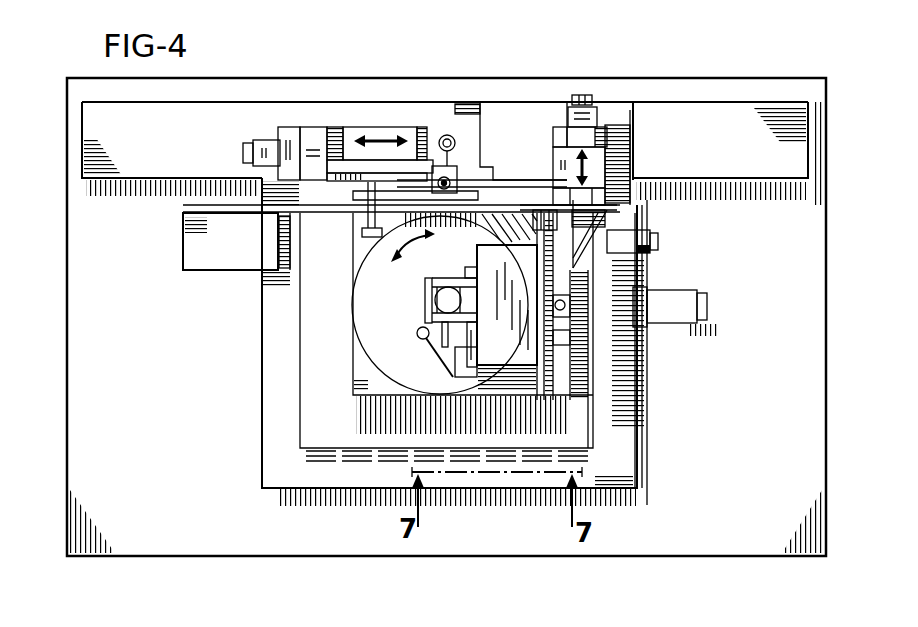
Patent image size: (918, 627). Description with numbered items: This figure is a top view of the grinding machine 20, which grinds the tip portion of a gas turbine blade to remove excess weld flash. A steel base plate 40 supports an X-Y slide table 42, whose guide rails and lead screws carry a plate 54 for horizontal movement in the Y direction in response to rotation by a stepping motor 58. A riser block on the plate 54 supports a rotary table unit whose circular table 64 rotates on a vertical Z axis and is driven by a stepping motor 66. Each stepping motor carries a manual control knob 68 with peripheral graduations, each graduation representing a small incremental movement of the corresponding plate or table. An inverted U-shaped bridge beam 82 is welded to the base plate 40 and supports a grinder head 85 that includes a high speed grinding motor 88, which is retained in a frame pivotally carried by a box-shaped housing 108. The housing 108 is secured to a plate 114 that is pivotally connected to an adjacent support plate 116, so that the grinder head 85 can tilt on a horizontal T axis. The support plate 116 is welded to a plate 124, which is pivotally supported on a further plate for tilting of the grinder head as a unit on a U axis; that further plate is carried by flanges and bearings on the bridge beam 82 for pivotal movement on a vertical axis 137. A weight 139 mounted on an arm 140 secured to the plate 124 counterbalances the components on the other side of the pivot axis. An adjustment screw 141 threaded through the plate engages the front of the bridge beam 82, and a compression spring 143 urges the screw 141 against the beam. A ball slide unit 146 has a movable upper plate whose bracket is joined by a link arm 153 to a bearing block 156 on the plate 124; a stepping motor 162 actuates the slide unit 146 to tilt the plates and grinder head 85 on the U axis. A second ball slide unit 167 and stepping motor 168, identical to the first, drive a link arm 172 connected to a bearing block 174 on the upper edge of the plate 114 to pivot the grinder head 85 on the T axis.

The grinding machine 20 is at (558, 66).
The steel base plate 40 is at (713, 552).
The X-Y slide table 42 is at (252, 378).
The plate 54 is at (262, 441).
The stepping motor 58 is at (687, 320).
The circular table 64 is at (368, 322).
The stepping motor 66 is at (637, 248).
The manual control knob 68 is at (243, 152).
The inverted U-shaped bridge beam 82 is at (134, 144).
The grinder head 85 is at (412, 290).
The high speed grinding motor 88 is at (455, 297).
The box-shaped housing 108 is at (488, 260).
The plate 114 is at (543, 382).
The support plate 116 is at (560, 343).
The plate 124 is at (497, 200).
The vertical axis 137 is at (451, 134).
The weight 139 is at (183, 250).
The arm 140 is at (282, 242).
The adjustment screw 141 is at (368, 236).
The compression spring 143 is at (540, 205).
The ball slide unit 146 is at (363, 118).
The link arm 153 is at (355, 162).
The bearing block 156 is at (430, 166).
The stepping motor 162 is at (258, 140).
The ball slide unit 167 is at (615, 150).
The stepping motor 168 is at (598, 115).
The link arm 172 is at (610, 212).
The bearing block 174 is at (560, 315).